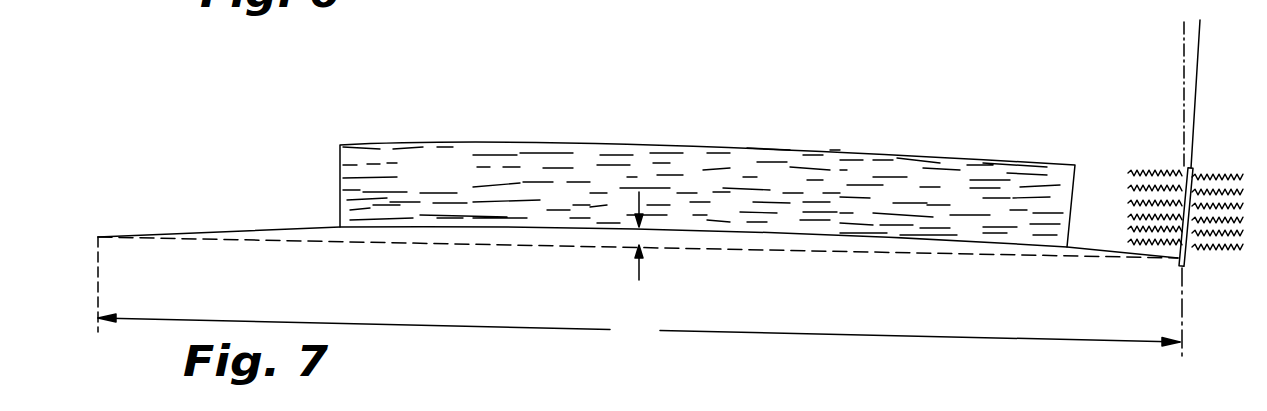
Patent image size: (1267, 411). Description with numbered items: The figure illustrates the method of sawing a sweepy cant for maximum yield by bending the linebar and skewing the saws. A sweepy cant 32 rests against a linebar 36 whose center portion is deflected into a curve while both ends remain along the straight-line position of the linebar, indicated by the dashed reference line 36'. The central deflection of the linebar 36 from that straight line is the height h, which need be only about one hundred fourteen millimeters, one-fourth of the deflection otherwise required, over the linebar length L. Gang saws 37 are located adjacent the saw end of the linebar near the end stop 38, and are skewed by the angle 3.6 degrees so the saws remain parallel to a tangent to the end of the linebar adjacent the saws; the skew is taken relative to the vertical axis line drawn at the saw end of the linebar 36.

The block / workpiece 32 is at (707, 194).
The upper surface of plate 36 is at (638, 218).
The reference plane (chord line) 36' is at (638, 263).
The gang saws 37 is at (1157, 164).
The end stop rod 38 is at (1185, 262).
The height of arc h is at (641, 236).
The length of plate L is at (639, 291).
The tilt angle 3.6 is at (1185, 31).